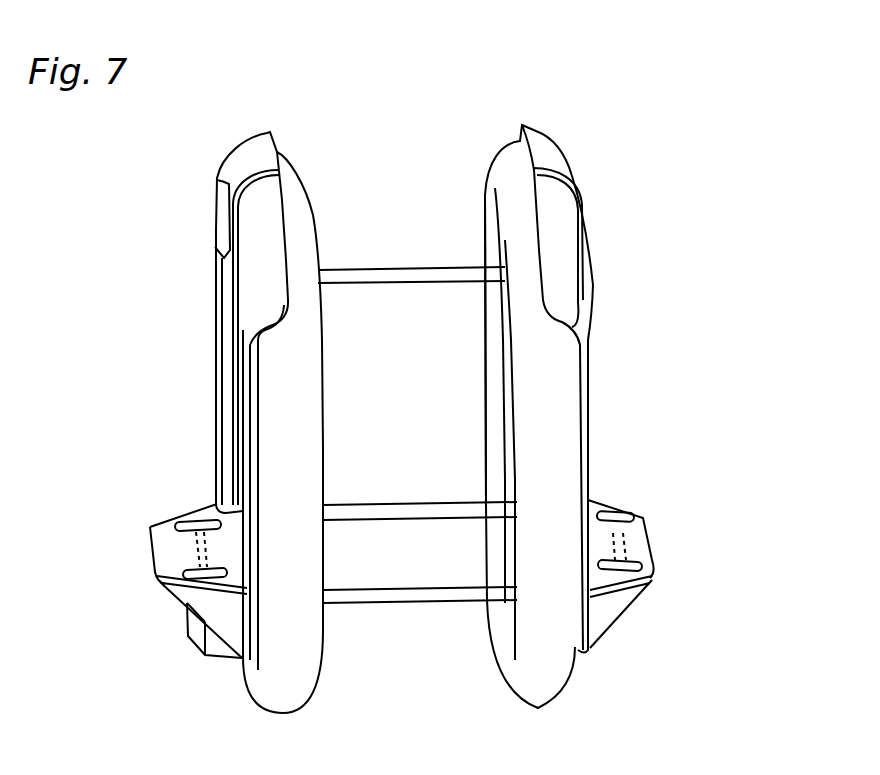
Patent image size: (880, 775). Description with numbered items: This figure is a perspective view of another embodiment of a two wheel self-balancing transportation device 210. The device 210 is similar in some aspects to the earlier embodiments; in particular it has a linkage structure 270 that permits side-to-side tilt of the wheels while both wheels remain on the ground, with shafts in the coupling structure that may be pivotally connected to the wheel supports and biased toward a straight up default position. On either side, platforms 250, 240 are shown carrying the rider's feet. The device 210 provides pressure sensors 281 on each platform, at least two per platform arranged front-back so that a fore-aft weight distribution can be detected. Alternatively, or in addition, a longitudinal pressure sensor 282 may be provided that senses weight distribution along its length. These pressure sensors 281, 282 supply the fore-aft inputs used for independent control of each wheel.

The two wheel self-balancing transportation device 210 is at (633, 103).
The linkage structure 270 is at (414, 246).
The left mounting bracket 250 is at (117, 490).
The right mounting bracket 240 is at (703, 464).
The pressure sensors 281 is at (172, 533).
The longitudinal pressure sensor 282 is at (625, 540).